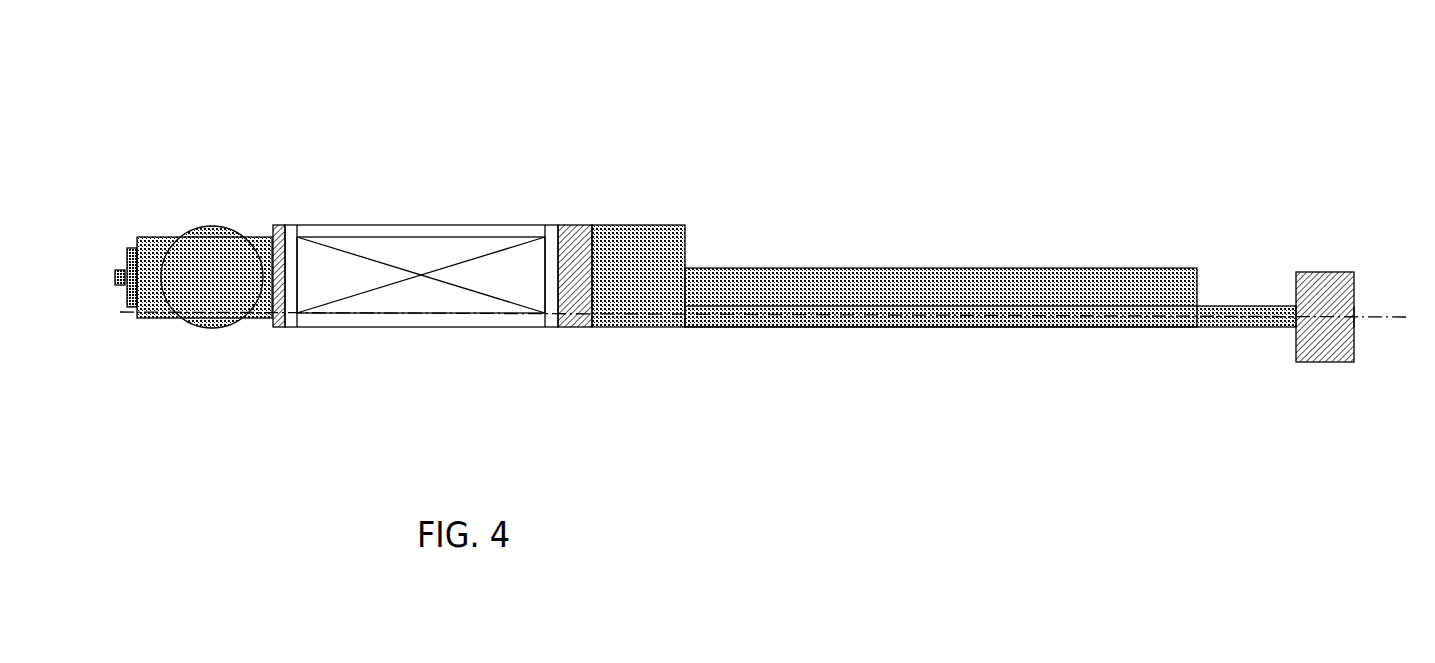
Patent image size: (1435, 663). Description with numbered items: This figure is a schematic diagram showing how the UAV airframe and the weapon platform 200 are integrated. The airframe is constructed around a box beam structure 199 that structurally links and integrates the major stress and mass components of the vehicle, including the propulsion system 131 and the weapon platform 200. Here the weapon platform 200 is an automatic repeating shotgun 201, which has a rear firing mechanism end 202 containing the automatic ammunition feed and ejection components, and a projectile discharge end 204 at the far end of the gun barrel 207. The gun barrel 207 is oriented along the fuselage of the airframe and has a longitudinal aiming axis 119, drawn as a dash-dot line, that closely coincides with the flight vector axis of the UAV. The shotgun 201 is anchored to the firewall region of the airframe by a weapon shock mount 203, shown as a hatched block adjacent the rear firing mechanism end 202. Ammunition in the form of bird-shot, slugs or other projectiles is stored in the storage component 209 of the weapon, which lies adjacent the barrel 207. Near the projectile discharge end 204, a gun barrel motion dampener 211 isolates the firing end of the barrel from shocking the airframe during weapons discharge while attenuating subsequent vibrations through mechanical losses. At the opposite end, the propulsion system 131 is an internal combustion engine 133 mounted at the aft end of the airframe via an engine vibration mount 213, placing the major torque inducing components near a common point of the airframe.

The longitudinal aiming axis 119 is at (774, 299).
The propulsion system 131 is at (206, 342).
The internal combustion engine 133 is at (210, 329).
The box beam structure 199 is at (433, 340).
The weapon platform 200 is at (1130, 81).
The automatic repeating shotgun 201 is at (1208, 212).
The rear firing mechanism end 202 is at (660, 225).
The weapon shock mount 203 is at (582, 225).
The projectile discharge end 204 is at (1356, 310).
The gun barrel 207 is at (1082, 306).
The storage component 209 is at (877, 268).
The gun barrel motion dampener 211 is at (1331, 375).
The engine vibration mount 213 is at (273, 328).